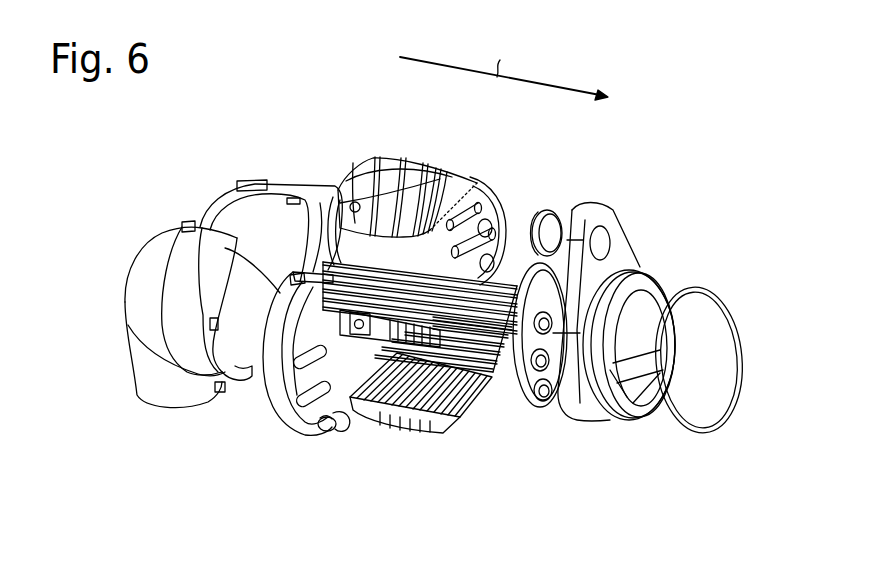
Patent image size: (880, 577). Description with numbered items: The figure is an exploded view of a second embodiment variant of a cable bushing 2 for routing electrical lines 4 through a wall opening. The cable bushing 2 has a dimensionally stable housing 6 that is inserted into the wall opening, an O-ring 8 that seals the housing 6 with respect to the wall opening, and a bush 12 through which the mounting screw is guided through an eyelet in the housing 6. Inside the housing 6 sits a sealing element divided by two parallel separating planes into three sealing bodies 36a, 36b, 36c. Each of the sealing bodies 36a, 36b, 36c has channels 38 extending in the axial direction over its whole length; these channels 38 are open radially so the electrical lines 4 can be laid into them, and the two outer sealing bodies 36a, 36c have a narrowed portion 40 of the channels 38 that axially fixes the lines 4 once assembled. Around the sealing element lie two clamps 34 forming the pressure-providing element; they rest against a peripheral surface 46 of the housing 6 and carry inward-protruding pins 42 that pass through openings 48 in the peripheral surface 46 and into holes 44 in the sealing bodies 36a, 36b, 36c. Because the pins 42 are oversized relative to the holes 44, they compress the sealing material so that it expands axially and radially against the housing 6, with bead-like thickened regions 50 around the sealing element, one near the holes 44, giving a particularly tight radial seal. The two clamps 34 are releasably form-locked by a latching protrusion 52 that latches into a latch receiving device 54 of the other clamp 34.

The cable bushing 2 is at (266, 111).
The electrical lines 4 is at (462, 318).
The housing 6 is at (622, 258).
The O-ring 8 is at (696, 288).
The bush 12 is at (550, 215).
The clamps 34 is at (503, 205).
The sealing body 36a is at (453, 190).
The central sealing body 36b is at (382, 327).
The sealing body 36c is at (460, 415).
The channels 38 is at (473, 390).
The narrowed portion 40 is at (367, 395).
The pins 42 is at (493, 214).
The holes 44 is at (355, 202).
The peripheral surface 46 is at (568, 213).
The openings 48 is at (547, 403).
The thickened regions 50 is at (387, 160).
The latching protrusion 52 is at (338, 428).
The latch receiving device 54 is at (298, 277).